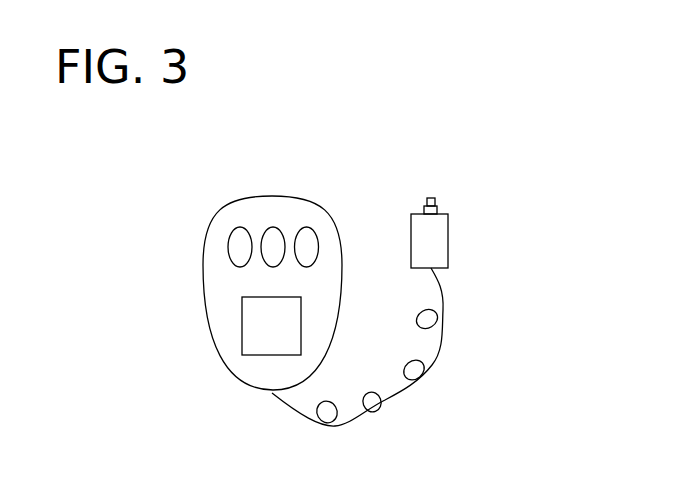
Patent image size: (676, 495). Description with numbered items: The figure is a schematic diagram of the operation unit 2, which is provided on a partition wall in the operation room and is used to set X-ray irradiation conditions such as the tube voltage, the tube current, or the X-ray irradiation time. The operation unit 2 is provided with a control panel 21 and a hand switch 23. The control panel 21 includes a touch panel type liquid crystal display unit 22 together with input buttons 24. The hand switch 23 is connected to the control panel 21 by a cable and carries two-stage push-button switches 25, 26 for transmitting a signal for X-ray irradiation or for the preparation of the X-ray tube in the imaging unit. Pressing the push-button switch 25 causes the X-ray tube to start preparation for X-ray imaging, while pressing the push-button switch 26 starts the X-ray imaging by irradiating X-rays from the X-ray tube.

The operation unit 2 is at (353, 133).
The control panel 21 is at (230, 305).
The touch panel type liquid crystal display unit 22 is at (283, 328).
The hand switch 23 is at (435, 243).
The input buttons 24 is at (240, 250).
The push-button switch 25 is at (430, 197).
The push-button switch 26 is at (437, 207).